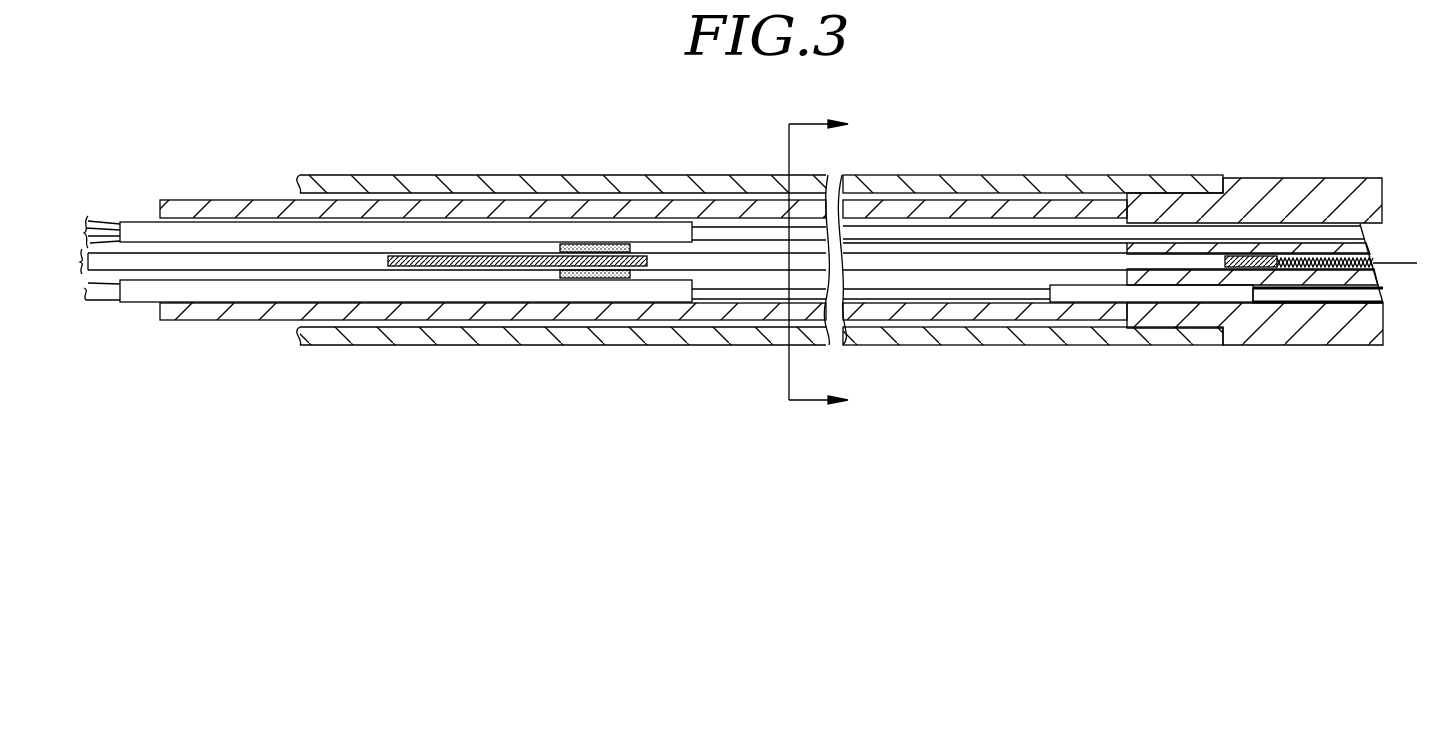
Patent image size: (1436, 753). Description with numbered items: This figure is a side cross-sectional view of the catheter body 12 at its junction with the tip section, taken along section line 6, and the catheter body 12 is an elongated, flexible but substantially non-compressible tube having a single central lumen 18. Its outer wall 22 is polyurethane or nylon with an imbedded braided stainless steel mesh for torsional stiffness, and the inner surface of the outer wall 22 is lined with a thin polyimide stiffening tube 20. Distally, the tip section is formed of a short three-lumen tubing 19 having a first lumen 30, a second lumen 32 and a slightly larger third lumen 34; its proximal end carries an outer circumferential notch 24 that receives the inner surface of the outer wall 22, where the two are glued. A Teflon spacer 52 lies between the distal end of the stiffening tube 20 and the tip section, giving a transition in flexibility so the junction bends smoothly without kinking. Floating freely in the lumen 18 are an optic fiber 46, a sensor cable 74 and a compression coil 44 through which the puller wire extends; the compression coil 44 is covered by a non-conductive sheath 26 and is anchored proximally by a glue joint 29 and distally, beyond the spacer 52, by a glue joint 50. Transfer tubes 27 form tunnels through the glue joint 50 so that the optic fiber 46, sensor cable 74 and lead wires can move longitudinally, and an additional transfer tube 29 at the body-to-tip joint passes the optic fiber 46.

The section line 6- 6 is at (832, 264).
The catheter body 12 is at (1043, 158).
The central lumen 18 is at (755, 250).
The tubing 19 is at (1306, 198).
The stiffening tube 20 is at (427, 210).
The outer wall 22 is at (924, 188).
The outer circumferential notch 24 is at (1168, 210).
The non-conductive sheath 26 is at (765, 263).
The transfer tubes 27 is at (248, 232).
The glue joint 29 is at (1198, 296).
The first lumen 30 is at (1388, 270).
The second lumen 32 is at (1385, 302).
The third lumen 34 is at (1360, 225).
The compression coil 44 is at (530, 257).
The optic fiber 46 is at (728, 298).
The glue joint 50 is at (598, 245).
The spacer 52 is at (1092, 208).
The sensor cable 74 is at (712, 228).